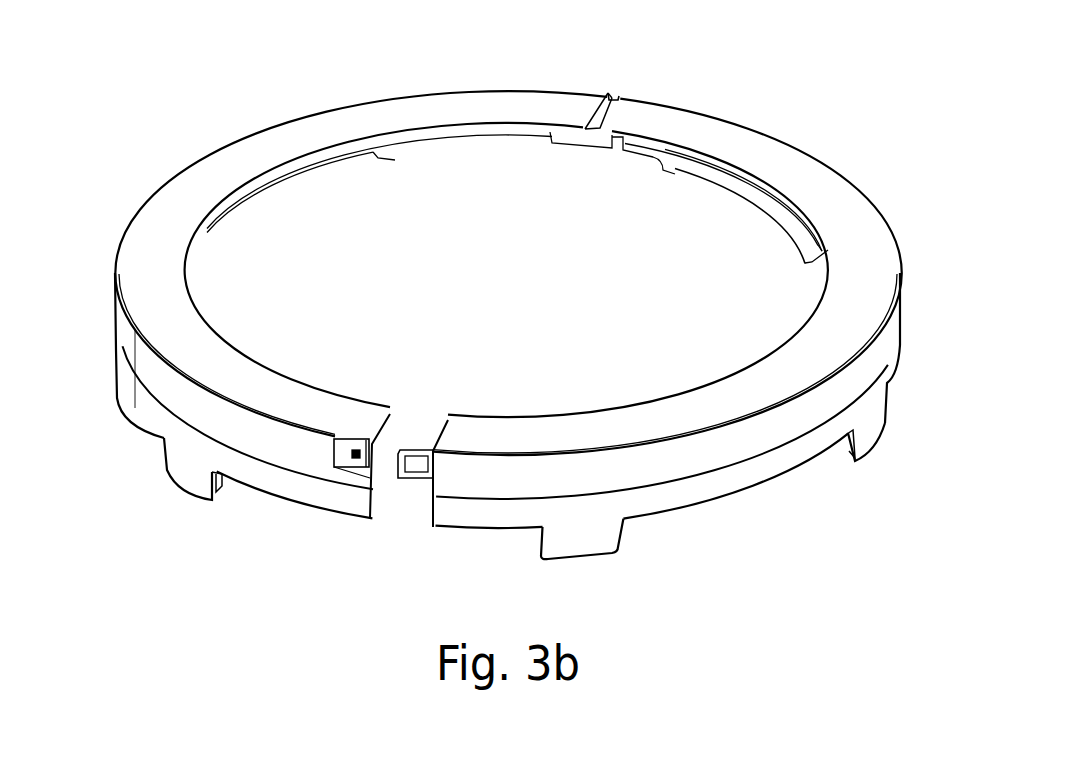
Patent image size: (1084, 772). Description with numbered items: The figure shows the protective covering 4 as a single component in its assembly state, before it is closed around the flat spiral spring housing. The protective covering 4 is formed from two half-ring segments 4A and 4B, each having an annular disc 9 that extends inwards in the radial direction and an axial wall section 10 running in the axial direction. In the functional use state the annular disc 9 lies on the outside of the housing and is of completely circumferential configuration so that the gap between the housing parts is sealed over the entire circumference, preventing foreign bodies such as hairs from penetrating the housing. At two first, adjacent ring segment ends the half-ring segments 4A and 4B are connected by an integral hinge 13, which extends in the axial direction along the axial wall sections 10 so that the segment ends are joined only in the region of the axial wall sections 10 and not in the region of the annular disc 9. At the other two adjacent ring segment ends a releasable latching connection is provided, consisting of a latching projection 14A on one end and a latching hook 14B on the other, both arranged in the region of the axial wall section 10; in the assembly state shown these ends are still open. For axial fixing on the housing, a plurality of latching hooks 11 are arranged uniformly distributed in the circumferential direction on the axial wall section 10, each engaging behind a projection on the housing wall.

The protective covering 4 is at (503, 319).
The half-ring segment 4A is at (177, 280).
The half-ring segment 4B is at (852, 273).
The annular disc 9 is at (273, 135).
The axial wall section 10 is at (143, 374).
The latching hook 11 is at (193, 467).
The integral hinge 13 is at (622, 80).
The latching projection 14A is at (351, 463).
The latching hook 14B is at (410, 477).